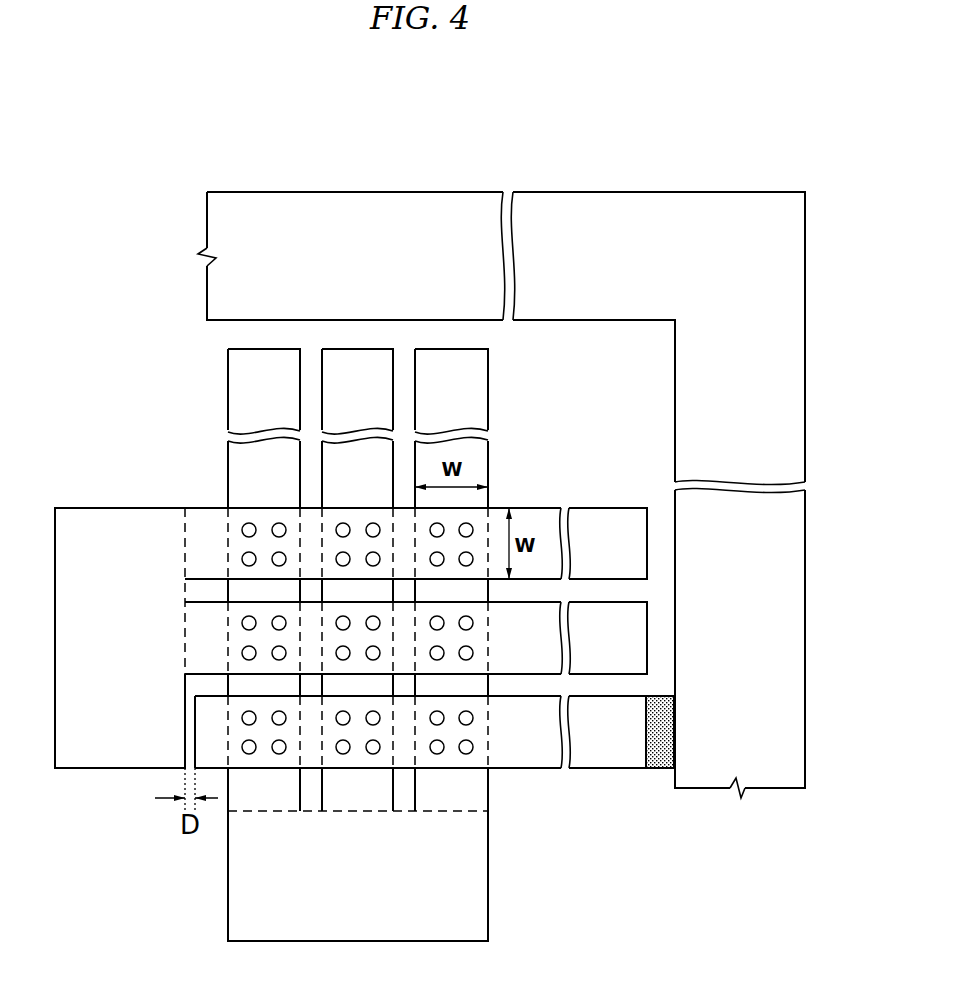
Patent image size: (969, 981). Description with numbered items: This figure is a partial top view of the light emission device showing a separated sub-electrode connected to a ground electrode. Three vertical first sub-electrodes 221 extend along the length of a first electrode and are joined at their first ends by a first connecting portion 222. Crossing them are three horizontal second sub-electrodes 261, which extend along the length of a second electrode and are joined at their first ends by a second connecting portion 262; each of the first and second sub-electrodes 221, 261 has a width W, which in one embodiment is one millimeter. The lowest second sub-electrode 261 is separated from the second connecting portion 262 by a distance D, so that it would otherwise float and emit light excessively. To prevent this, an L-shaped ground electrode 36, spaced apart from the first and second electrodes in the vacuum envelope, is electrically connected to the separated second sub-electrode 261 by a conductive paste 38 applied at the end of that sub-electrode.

The ground electrode 36 is at (748, 205).
The conductive paste 38 is at (660, 757).
The first sub-electrodes 221 is at (447, 385).
The first connecting portion 222 is at (470, 905).
The second sub-electrodes 261 is at (617, 735).
The second connecting portion 262 is at (108, 752).